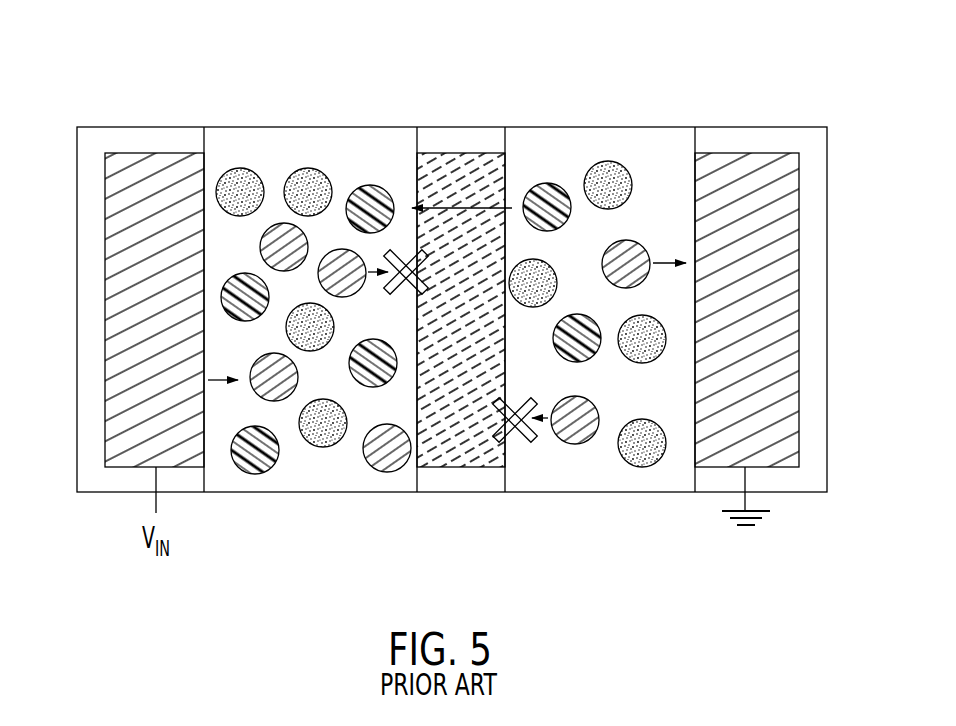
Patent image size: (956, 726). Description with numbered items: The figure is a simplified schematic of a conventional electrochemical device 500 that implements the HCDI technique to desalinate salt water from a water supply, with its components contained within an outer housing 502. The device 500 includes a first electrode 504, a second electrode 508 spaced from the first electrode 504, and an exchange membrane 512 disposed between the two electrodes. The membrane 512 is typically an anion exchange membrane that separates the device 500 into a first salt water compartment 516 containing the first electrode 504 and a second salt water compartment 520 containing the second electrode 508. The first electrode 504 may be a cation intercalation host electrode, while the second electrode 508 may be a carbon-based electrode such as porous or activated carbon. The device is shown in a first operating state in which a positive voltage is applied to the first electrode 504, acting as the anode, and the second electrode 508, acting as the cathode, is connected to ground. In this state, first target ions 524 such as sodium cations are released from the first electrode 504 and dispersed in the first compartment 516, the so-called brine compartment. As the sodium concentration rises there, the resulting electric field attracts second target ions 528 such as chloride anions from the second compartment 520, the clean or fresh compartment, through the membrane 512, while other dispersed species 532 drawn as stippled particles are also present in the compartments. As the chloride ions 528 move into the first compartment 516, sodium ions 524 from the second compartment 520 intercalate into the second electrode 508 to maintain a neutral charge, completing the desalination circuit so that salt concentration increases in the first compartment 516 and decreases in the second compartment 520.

The electrochemical device 500 is at (78, 106).
The housing 502 is at (102, 493).
The first electrode 504 is at (100, 247).
The second electrode 508 is at (808, 247).
The exchange membrane 512 is at (452, 473).
The first salt water compartment 516 is at (268, 142).
The second salt water compartment 520 is at (655, 142).
The first target ions 524 is at (380, 470).
The second target ions 528 is at (366, 184).
The neutral species 532 is at (608, 161).